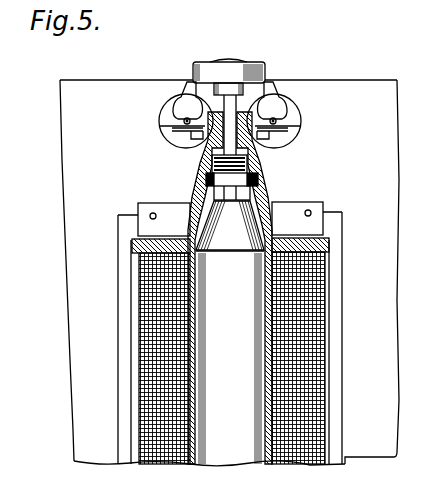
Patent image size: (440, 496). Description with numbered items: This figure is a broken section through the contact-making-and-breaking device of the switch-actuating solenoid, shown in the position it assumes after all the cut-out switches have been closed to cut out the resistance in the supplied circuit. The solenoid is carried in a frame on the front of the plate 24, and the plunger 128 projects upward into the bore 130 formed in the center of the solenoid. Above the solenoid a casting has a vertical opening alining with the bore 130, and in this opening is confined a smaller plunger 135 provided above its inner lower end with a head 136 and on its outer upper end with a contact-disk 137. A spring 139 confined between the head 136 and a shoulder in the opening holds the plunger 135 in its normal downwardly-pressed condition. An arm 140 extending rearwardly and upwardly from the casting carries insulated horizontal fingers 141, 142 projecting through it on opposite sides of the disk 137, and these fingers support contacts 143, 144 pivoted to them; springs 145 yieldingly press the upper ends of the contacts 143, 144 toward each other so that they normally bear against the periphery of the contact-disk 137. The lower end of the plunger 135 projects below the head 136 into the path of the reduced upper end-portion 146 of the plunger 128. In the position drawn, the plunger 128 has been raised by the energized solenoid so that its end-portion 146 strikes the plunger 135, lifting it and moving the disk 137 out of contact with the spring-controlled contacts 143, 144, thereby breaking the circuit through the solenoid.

The plate 24 is at (353, 79).
The plunger 128 is at (228, 232).
The bore 130 is at (312, 298).
The plunger 135 is at (200, 152).
The head 136 is at (256, 190).
The contact-disk 137 is at (233, 68).
The spring 139 is at (250, 165).
The arm 140 is at (207, 88).
The finger 141 is at (176, 112).
The finger 142 is at (284, 108).
The contact 143 is at (191, 85).
The contact 144 is at (272, 88).
The springs 145 is at (165, 124).
The reduced upper end-portion 146 is at (230, 225).